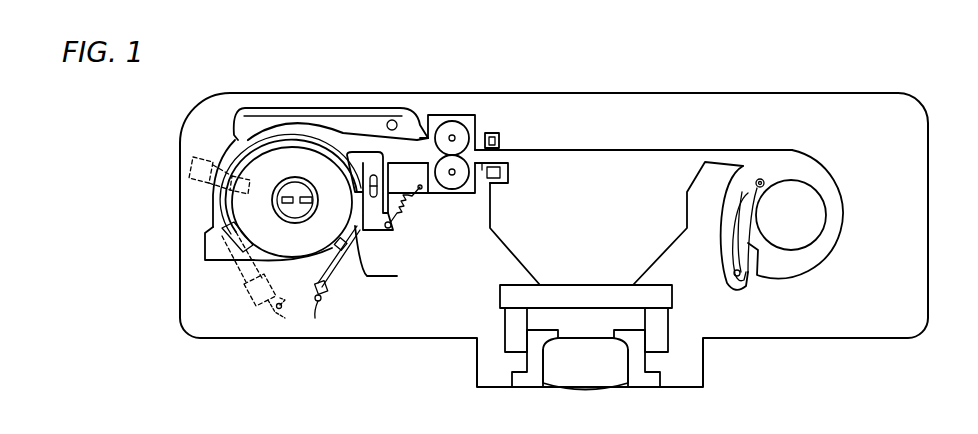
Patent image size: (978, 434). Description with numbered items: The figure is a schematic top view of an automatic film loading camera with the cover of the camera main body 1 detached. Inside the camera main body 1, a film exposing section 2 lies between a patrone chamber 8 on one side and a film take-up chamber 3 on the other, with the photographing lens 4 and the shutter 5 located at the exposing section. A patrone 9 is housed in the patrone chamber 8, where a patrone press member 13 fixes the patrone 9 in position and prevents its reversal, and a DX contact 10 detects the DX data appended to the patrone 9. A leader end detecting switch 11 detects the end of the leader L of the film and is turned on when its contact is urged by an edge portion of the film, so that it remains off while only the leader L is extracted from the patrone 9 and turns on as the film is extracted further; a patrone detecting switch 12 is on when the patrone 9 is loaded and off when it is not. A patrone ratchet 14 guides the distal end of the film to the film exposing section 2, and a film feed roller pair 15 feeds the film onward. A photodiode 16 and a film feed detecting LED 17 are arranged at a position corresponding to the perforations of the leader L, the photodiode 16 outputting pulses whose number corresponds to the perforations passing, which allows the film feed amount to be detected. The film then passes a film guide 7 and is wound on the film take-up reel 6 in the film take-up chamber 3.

The camera main body 1 is at (650, 118).
The film exposing section 2 is at (588, 165).
The film take-up chamber 3 is at (840, 193).
The photographing lens 4 is at (598, 382).
The shutter 5 is at (500, 287).
The film take-up reel 6 is at (792, 238).
The film guide 7 is at (760, 273).
The patrone chamber 8 is at (252, 140).
The patrone 9 is at (253, 210).
The DX contact 10 is at (353, 232).
The leader end detecting switch 11 is at (247, 305).
The patrone detecting switch 12 is at (190, 167).
The patrone press member 13 is at (305, 117).
The patrone ratchet 14 is at (369, 163).
The film feed roller pair 15 is at (451, 125).
The photodiode 16 is at (493, 132).
The film feed detecting LED 17 is at (500, 166).
The leader L is at (222, 146).